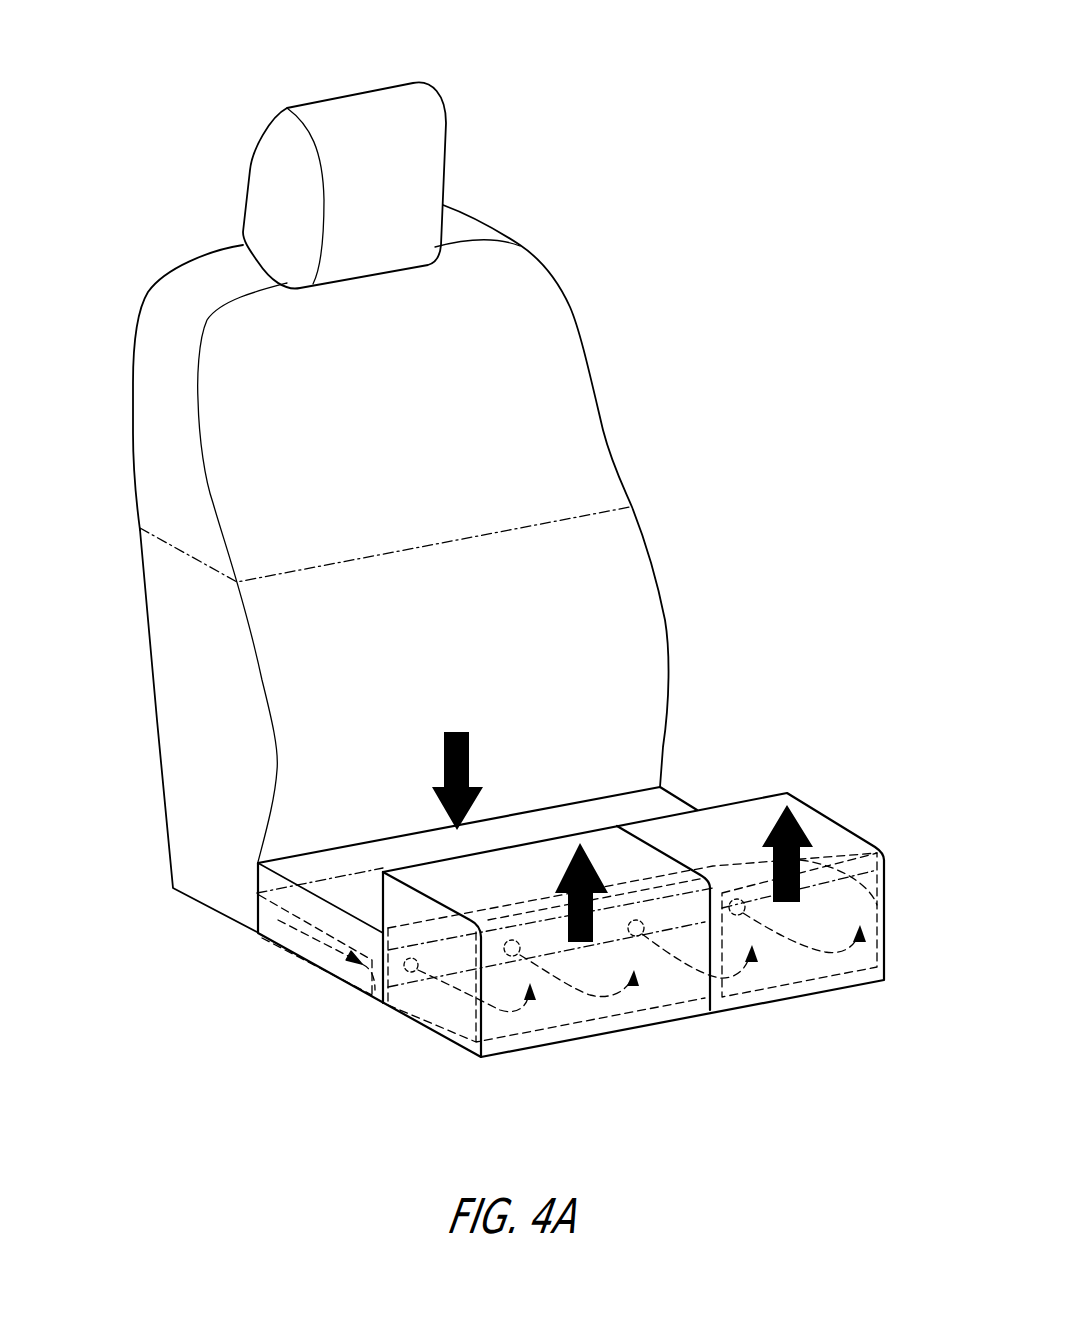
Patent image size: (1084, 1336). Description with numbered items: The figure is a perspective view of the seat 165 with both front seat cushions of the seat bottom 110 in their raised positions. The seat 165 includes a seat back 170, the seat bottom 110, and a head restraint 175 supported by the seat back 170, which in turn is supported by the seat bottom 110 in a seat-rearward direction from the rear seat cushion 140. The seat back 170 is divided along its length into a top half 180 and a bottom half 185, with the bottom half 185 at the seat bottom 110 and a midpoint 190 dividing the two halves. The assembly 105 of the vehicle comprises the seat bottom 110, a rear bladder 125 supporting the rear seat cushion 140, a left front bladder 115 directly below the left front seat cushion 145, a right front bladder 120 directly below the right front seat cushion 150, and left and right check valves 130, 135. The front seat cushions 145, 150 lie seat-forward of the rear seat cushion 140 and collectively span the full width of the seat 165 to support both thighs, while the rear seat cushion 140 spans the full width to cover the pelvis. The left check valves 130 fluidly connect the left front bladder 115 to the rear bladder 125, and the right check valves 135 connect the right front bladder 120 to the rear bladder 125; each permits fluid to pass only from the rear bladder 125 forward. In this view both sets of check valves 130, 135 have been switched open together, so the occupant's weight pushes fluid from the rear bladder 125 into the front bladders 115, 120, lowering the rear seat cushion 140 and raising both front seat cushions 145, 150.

The assembly 105 is at (502, 576).
The seat bottom 110 is at (607, 872).
The left front bladder 115 is at (802, 980).
The right front bladder 120 is at (630, 1040).
The rear bladder 125 is at (340, 980).
The left check valve 130 is at (737, 898).
The right check valve 135 is at (505, 940).
The rear seat cushion 140 is at (680, 795).
The left front seat cushion 145 is at (838, 822).
The right front seat cushion 150 is at (648, 845).
The seat 165 is at (386, 481).
The seat back 170 is at (593, 383).
The head restraint 175 is at (317, 102).
The top half 180 is at (137, 460).
The bottom half 185 is at (152, 698).
The midpoint 190 is at (178, 548).